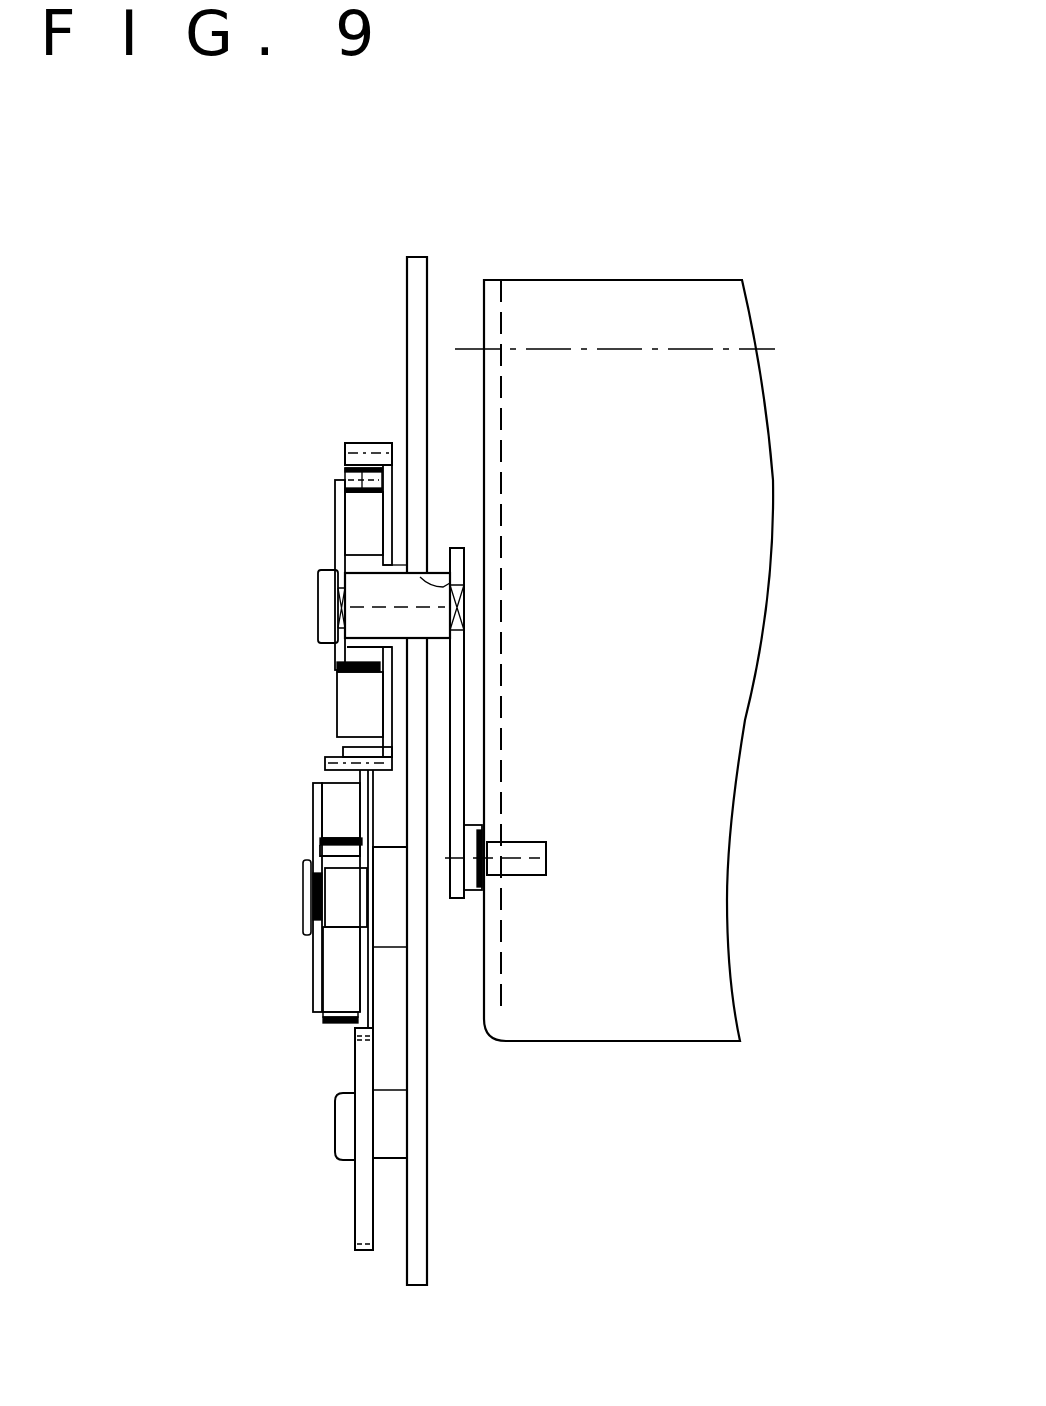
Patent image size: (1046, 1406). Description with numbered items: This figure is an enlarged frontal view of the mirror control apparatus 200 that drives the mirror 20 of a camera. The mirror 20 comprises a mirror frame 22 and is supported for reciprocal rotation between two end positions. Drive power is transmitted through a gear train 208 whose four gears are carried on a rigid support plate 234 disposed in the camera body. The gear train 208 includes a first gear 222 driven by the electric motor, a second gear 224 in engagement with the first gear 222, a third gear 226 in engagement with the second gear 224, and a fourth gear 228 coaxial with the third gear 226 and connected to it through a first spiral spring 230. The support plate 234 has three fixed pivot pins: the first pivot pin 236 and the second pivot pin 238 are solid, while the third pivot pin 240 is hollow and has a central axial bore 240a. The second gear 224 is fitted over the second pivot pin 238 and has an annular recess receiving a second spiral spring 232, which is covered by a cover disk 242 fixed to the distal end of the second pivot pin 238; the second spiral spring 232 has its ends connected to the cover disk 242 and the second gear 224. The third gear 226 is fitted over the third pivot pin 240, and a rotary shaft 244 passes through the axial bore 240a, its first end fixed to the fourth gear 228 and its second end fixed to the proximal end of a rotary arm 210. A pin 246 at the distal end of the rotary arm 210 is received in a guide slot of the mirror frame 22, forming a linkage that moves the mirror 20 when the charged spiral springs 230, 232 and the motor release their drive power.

The mirror 20 is at (828, 444).
The mirror frame 22 is at (483, 307).
The mirror control apparatus 200 is at (803, 1216).
The gear train 208 is at (275, 795).
The rotary arm 210 is at (463, 730).
The first gear 222 is at (355, 1228).
The second gear 224 is at (334, 1028).
The third gear 226 is at (362, 442).
The fourth gear 228 is at (355, 535).
The first spiral spring 230 is at (355, 537).
The second spiral spring 232 is at (335, 987).
The support plate 234 is at (419, 257).
The first pivot pin 236 is at (385, 1158).
The second pivot pin 238 is at (386, 950).
The third pivot pin 240 is at (397, 560).
The axial bore 240a is at (463, 582).
The cover disk 242 is at (310, 968).
The rotary shaft 244 is at (433, 617).
The pin 246 is at (523, 838).